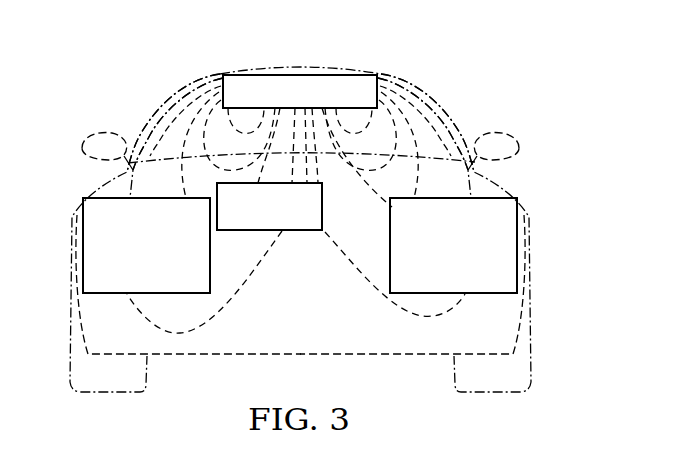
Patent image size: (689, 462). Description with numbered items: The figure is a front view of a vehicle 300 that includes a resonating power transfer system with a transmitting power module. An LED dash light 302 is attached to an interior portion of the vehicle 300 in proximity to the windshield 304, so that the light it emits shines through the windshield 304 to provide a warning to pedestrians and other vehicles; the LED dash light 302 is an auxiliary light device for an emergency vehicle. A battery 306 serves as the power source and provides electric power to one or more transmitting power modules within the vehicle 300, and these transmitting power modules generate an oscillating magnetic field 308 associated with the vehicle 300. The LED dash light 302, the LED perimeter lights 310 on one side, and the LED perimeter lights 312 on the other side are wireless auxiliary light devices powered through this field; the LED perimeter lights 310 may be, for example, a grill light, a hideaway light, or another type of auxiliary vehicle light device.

The vehicle 300 is at (85, 102).
The LED dash light 302 is at (303, 72).
The windshield 304 is at (430, 90).
The battery 306 is at (292, 232).
The oscillating magnetic field 308 is at (187, 98).
The LED perimeter lights 310 is at (119, 295).
The LED perimeter lights 312 is at (486, 295).